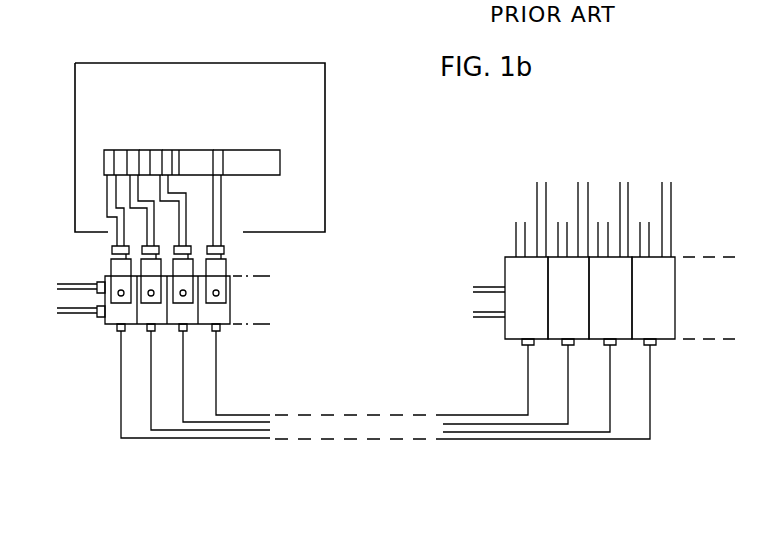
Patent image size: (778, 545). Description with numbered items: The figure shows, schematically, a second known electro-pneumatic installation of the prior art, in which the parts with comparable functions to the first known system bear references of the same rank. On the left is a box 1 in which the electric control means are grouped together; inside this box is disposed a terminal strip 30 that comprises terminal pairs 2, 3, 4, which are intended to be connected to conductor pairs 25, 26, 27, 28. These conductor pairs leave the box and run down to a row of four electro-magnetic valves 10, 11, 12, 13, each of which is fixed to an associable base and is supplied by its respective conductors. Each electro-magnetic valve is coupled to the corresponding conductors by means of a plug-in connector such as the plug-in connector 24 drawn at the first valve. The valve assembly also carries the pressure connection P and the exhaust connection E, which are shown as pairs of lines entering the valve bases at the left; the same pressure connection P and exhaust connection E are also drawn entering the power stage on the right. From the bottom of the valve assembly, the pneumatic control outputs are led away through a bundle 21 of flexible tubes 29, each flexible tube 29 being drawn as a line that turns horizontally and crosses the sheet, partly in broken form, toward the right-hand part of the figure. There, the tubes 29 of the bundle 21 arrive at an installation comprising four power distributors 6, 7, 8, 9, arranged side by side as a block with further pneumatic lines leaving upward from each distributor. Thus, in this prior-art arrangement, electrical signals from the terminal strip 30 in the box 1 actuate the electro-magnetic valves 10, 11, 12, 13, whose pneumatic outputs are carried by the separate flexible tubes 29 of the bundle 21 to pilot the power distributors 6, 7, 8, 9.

The box 1 is at (327, 70).
The terminal pair 2 is at (113, 150).
The terminal pair 3 is at (133, 150).
The terminal pair 4 is at (157, 150).
The terminal strip 30 is at (278, 150).
The conductor pair 25 is at (116, 188).
The conductor pair 26 is at (147, 216).
The conductor pair 27 is at (183, 218).
The conductor pair 28 is at (222, 194).
The plug-in connector 24 is at (118, 262).
The electro-magnetic valve 10 is at (120, 282).
The electro-magnetic valve 11 is at (150, 284).
The electro-magnetic valve 12 is at (185, 277).
The electro-magnetic valve 13 is at (217, 285).
The power distributor 6 is at (530, 309).
The power distributor 7 is at (572, 309).
The power distributor 8 is at (614, 309).
The power distributor 9 is at (656, 309).
The flexible tube 29 is at (143, 440).
The bundle of flexible tubes 21 is at (290, 440).
The pressure supply P is at (272, 288).
The exhaust E is at (272, 313).